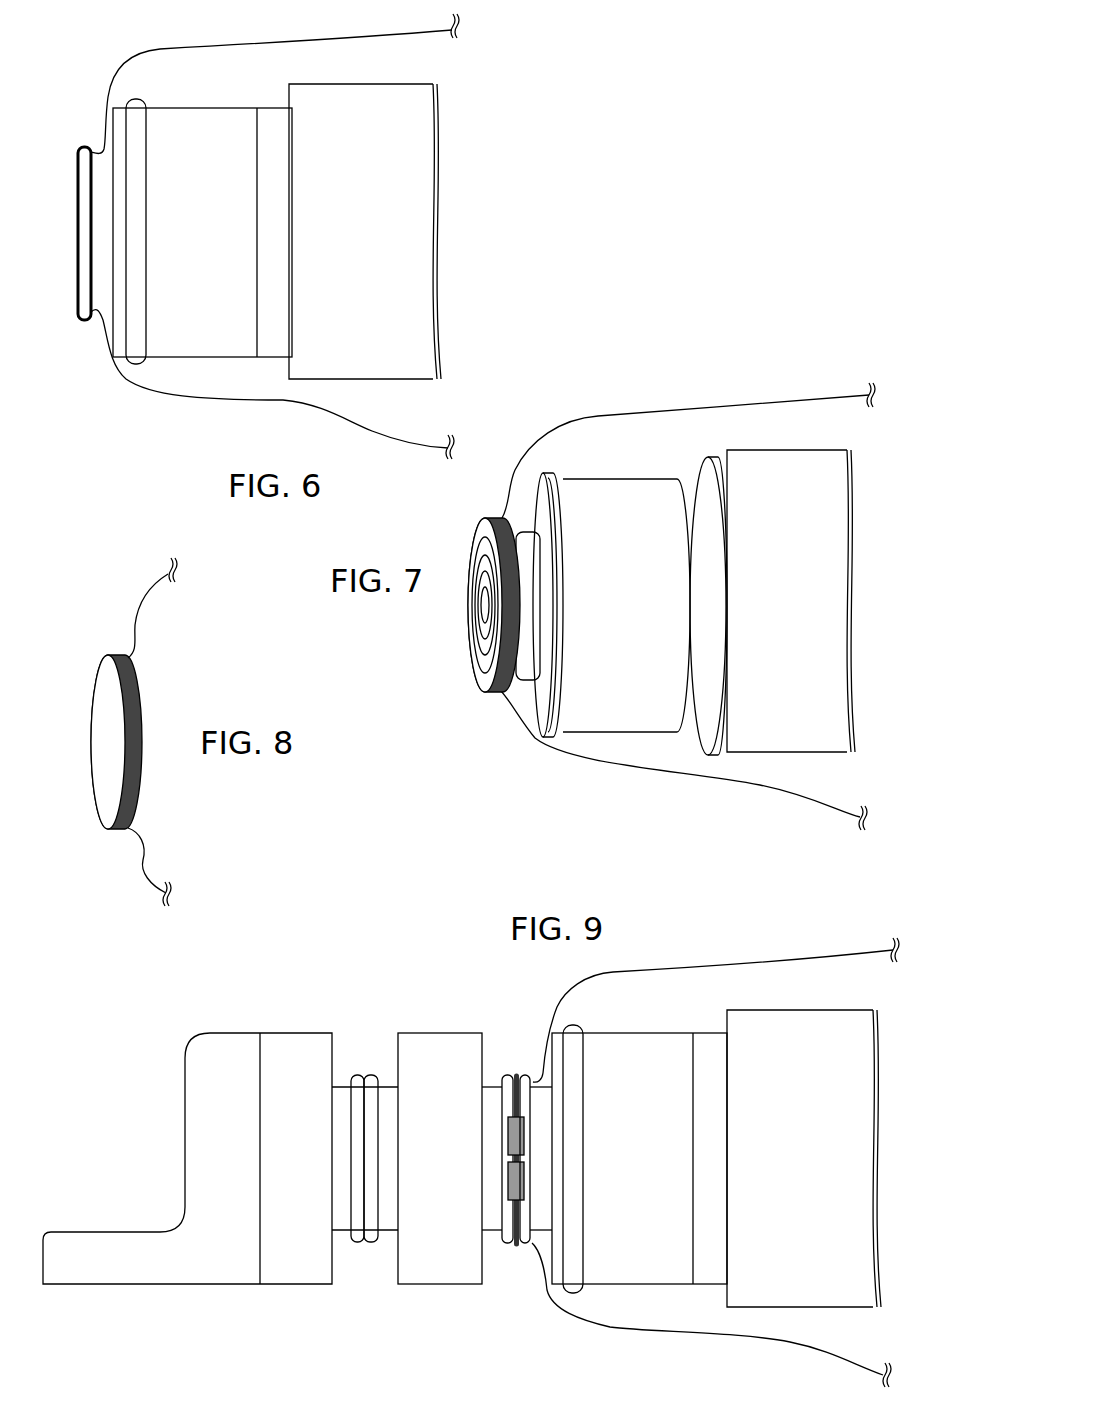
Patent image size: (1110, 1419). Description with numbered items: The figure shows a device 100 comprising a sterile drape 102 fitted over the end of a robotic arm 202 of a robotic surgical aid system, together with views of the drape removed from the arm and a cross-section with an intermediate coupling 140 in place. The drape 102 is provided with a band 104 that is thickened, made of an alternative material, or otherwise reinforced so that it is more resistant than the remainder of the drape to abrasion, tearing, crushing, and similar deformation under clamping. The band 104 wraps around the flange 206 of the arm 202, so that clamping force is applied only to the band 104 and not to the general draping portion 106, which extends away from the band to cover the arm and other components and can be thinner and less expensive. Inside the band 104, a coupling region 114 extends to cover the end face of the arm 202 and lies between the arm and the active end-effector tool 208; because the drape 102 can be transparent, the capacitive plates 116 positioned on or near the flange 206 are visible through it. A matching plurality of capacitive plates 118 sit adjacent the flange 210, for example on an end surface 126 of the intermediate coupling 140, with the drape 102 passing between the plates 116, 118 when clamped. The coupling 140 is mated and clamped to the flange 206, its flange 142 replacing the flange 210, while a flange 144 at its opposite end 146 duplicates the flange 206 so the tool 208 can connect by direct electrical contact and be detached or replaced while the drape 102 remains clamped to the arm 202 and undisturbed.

In FIG. 6, the device 100 is at (552, 151).
In FIG. 7, the device 100 is at (763, 314).
In FIG. 9, the device 100 is at (464, 952).
In FIG. 6, the drape 102 is at (430, 42).
In FIG. 7, the drape 102 is at (795, 400).
In FIG. 8, the drape 102 is at (168, 684).
In FIG. 9, the drape 102 is at (765, 953).
In FIG. 6, the band 104 is at (87, 326).
In FIG. 7, the band 104 is at (495, 698).
In FIG. 8, the band 104 is at (109, 838).
In FIG. 9, the band 104 is at (523, 1252).
In FIG. 7, the general draping portion 106 is at (596, 411).
In FIG. 8, the general draping portion 106 is at (146, 587).
In FIG. 9, the general draping portion 106 is at (665, 968).
In FIG. 8, the coupling region 114 is at (106, 736).
In FIG. 7, the capacitive plates 116 is at (477, 544).
In FIG. 9, the capacitive plates 116 is at (534, 1190).
In FIG. 9, the capacitive plates 118 is at (503, 1134).
In FIG. 9, the end surface 126 is at (506, 1105).
In FIG. 9, the intermediate coupling 140 is at (462, 1178).
In FIG. 9, the flange 142 is at (503, 1244).
In FIG. 9, the flange 144 is at (388, 1248).
In FIG. 9, the opposite end 146 is at (373, 1241).
In FIG. 6, the robotic arm 202 is at (428, 263).
In FIG. 7, the robotic arm 202 is at (669, 466).
In FIG. 9, the robotic arm 202 is at (820, 1176).
In FIG. 6, the flange 206 is at (86, 178).
In FIG. 9, the flange 206 is at (526, 1098).
In FIG. 9, the active end-effector tool 208 is at (190, 1093).
In FIG. 9, the flange 210 is at (358, 1076).